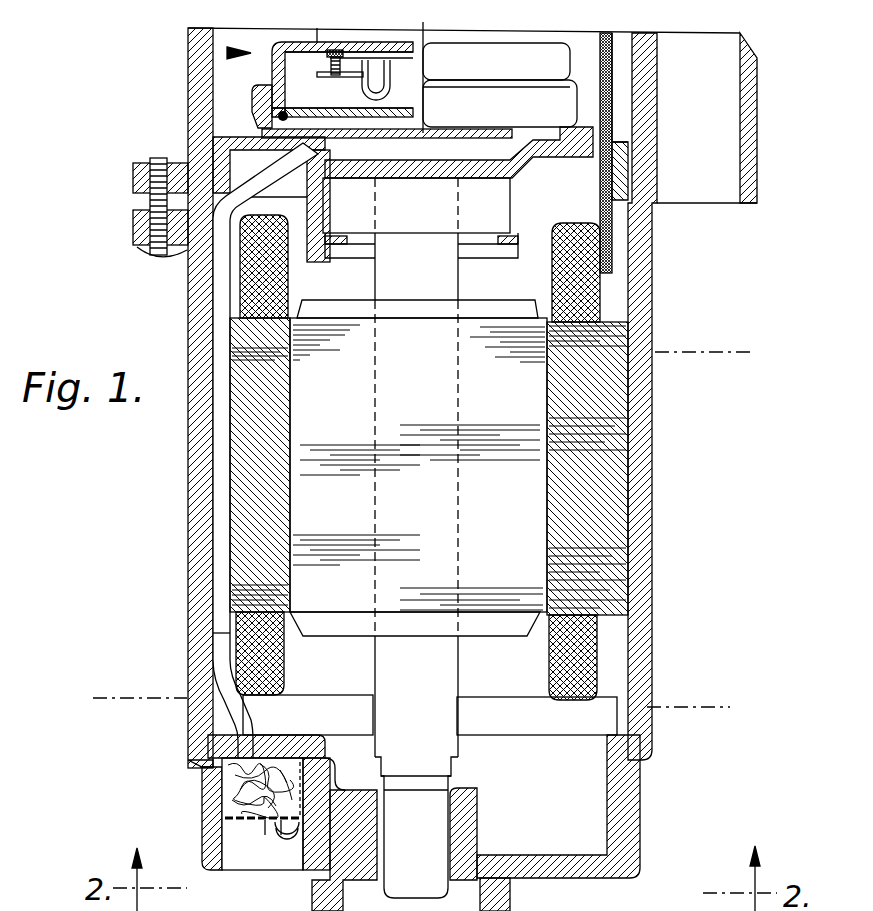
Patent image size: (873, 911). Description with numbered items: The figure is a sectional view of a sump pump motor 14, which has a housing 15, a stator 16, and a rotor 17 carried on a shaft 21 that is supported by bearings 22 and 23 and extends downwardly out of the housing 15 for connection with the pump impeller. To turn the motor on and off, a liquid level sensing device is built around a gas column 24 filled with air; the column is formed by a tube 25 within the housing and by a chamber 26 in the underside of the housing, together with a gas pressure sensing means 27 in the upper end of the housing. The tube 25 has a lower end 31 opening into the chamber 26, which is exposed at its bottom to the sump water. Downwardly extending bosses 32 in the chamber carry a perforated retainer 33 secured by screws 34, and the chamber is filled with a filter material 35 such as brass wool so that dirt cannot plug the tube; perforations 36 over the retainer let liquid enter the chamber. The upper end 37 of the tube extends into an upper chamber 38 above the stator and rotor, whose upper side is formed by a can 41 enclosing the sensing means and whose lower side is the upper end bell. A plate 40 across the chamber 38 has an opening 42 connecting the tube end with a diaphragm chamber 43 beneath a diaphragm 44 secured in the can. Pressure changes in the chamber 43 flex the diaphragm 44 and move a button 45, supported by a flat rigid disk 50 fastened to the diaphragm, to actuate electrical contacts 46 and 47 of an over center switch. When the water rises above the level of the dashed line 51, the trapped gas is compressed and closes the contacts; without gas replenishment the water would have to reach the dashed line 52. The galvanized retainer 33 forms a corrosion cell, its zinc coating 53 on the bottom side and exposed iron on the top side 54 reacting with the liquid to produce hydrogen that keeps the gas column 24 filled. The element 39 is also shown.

The motor 14 is at (670, 508).
The housing 15 is at (640, 642).
The stator 16 is at (280, 433).
The rotor 17 is at (348, 433).
The shaft 21 is at (433, 679).
The bearing 22 is at (457, 788).
The bearing 23 is at (497, 219).
The gas column 24 is at (208, 722).
The tube 25 is at (216, 628).
The chamber 26 is at (223, 850).
The gas pressure sensing means 27 is at (230, 53).
The lower end 31 is at (245, 778).
The bosses 32 is at (298, 737).
The retainer 33 is at (280, 818).
The screws 34 is at (281, 836).
The filter material 35 is at (245, 790).
The perforations 36 is at (266, 836).
The upper end 37 is at (277, 153).
The upper chamber 38 is at (459, 152).
The terminal 39 is at (578, 147).
The plate 40 is at (413, 140).
The can 41 is at (520, 113).
The opening 42 is at (350, 221).
The diaphragm chamber 43 is at (275, 122).
The diaphragm 44 is at (287, 97).
The button 45 is at (415, 83).
The electrical contact 46 is at (330, 58).
The electrical contact 47 is at (347, 68).
The flat rigid disk 50 is at (387, 110).
The dashed line 51 is at (115, 700).
The dashed line 52 is at (173, 338).
The zinc coating 53 is at (250, 822).
The top side 54 is at (290, 800).